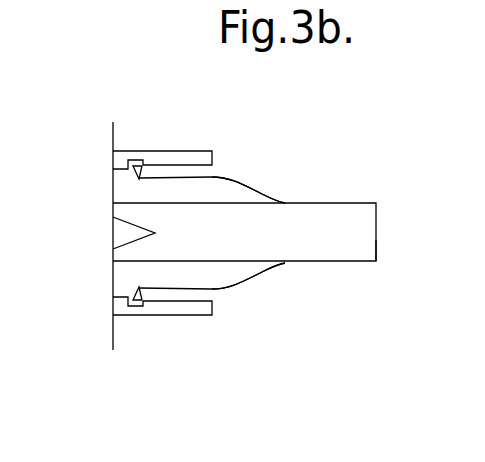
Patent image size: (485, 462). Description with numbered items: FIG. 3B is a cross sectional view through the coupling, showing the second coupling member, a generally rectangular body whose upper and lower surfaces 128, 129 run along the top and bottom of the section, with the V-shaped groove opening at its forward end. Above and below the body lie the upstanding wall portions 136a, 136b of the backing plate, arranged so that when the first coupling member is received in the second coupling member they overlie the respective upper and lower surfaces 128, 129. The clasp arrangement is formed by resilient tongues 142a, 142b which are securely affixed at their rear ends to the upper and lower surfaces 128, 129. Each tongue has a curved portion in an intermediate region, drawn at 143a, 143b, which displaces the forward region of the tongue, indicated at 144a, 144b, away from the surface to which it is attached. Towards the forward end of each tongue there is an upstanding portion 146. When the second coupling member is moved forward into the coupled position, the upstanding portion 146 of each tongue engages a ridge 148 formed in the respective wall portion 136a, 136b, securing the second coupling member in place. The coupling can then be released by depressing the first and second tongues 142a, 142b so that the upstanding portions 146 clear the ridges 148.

The upper surface 128 is at (353, 203).
The lower surface 129 is at (357, 261).
The upstanding wall portion 136a is at (212, 150).
The upstanding wall portion 136b is at (197, 317).
The resilient tongue 142a is at (232, 173).
The resilient tongue 142b is at (250, 282).
The upper bend 143a is at (290, 201).
The lower bend 143b is at (297, 262).
The upper tapered section 144a is at (262, 195).
The lower tapered section 144b is at (238, 284).
The upstanding portion 146 is at (133, 168).
The ridge 148 is at (143, 151).